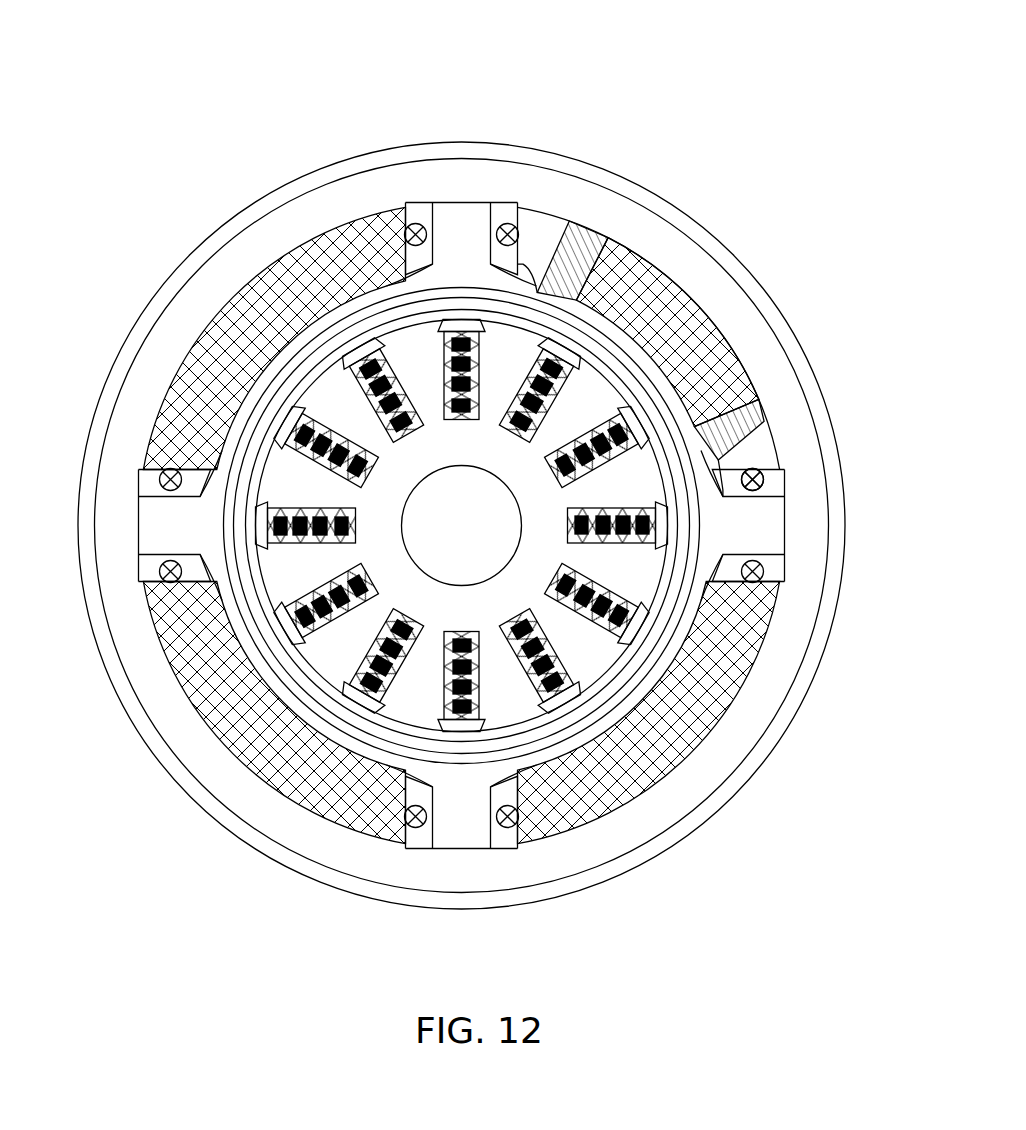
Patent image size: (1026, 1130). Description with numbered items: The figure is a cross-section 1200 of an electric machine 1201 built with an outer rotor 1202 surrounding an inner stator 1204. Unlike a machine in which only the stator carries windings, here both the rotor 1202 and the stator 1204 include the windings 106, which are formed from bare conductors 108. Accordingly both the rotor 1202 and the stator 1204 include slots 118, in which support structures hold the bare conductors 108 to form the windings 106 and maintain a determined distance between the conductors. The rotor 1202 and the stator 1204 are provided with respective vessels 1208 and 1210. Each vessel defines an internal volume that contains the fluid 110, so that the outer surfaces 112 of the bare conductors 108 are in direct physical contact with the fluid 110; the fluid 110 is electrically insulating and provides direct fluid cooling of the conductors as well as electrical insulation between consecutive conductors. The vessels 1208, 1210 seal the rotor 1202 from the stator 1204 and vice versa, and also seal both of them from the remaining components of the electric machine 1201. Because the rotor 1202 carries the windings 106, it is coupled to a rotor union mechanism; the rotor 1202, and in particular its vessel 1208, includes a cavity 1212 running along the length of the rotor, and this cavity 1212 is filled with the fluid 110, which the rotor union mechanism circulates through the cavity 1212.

The windings 106 is at (770, 462).
The bare conductors 108 is at (753, 462).
The fluid 110 is at (486, 662).
The outer surfaces 112 is at (645, 737).
The slots 118 is at (733, 478).
The cross-section 1200 is at (180, 88).
The electric machine 1201 is at (698, 240).
The outer rotor 1202 is at (120, 632).
The inner stator 1204 is at (513, 453).
The vessel 1208 is at (193, 712).
The vessel 1210 is at (317, 370).
The cavity 1212 is at (346, 283).